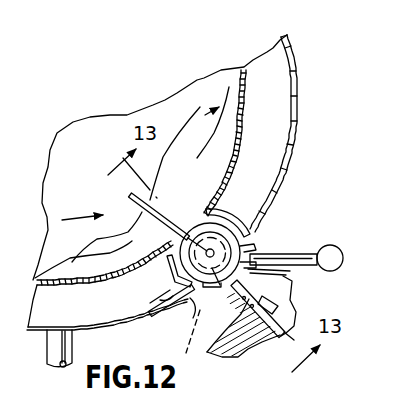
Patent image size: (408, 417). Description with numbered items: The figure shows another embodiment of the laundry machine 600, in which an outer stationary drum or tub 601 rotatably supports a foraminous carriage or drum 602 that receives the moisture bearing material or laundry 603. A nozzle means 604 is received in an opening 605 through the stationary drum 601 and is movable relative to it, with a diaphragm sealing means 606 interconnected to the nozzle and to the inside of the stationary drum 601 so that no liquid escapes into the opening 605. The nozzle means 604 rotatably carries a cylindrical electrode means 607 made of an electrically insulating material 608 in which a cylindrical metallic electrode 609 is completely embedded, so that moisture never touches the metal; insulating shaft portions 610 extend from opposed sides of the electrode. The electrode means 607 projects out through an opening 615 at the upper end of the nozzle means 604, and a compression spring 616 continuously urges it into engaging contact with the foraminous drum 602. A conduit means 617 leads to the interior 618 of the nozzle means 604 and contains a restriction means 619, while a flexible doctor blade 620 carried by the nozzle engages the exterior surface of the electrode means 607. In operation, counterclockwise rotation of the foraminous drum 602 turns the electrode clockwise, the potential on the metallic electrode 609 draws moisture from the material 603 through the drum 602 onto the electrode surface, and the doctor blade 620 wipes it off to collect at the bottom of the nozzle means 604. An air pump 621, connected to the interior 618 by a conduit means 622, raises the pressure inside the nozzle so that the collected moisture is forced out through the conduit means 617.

The laundry machine 600 is at (311, 47).
The outer stationary drum 601 is at (297, 137).
The foraminous drum 602 is at (234, 79).
The moisture bearing material 603 is at (192, 87).
The nozzle means 604 is at (246, 249).
The opening 605 is at (198, 312).
The diaphragm sealing means 606 is at (157, 306).
The cylindrical electrode means 607 is at (248, 267).
The electrically insulating material 608 is at (254, 232).
The cylindrical metallic electrode 609 is at (200, 333).
The insulating shaft portions 610 is at (168, 222).
The opening 615 is at (208, 219).
The compression spring 616 is at (245, 306).
The conduit means 617 is at (276, 344).
The interior 618 is at (285, 271).
The restriction means 619 is at (278, 311).
The flexible doctor blade 620 is at (163, 288).
The air pump 621 is at (343, 256).
The conduit means 622 is at (309, 251).